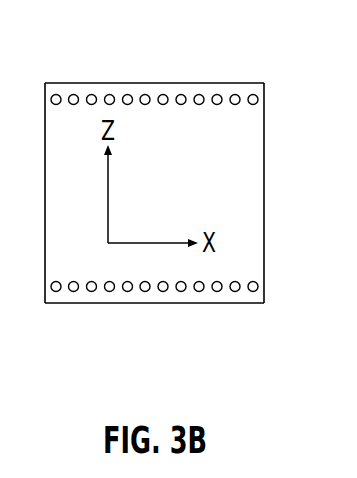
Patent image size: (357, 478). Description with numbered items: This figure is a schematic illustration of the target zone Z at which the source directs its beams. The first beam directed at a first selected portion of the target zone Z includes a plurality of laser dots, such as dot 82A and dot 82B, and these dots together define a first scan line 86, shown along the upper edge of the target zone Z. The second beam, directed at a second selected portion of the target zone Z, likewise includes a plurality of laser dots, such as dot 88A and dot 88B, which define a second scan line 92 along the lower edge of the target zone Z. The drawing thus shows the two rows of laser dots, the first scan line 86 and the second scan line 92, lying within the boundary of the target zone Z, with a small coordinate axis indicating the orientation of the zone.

The first upper through hole / opening 82A is at (73, 94).
The second upper through hole / opening 82B is at (127, 94).
The upper edge of plate 86 is at (224, 81).
The first lower through hole / opening 88A is at (73, 292).
The second lower through hole / opening 88B is at (128, 292).
The lower edge of plate 92 is at (224, 306).
The plate / Z direction label Z is at (264, 193).